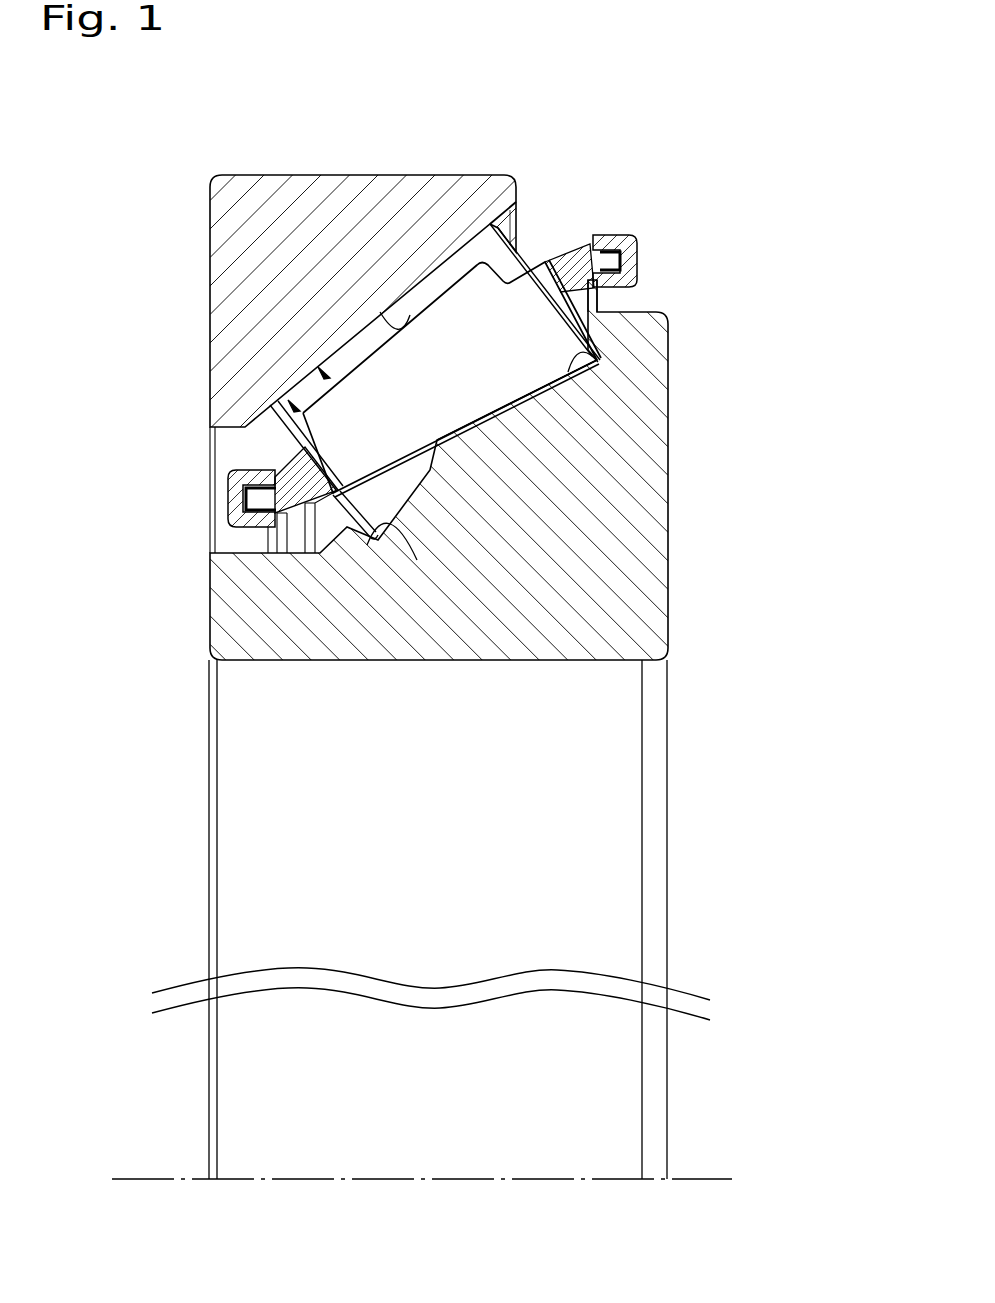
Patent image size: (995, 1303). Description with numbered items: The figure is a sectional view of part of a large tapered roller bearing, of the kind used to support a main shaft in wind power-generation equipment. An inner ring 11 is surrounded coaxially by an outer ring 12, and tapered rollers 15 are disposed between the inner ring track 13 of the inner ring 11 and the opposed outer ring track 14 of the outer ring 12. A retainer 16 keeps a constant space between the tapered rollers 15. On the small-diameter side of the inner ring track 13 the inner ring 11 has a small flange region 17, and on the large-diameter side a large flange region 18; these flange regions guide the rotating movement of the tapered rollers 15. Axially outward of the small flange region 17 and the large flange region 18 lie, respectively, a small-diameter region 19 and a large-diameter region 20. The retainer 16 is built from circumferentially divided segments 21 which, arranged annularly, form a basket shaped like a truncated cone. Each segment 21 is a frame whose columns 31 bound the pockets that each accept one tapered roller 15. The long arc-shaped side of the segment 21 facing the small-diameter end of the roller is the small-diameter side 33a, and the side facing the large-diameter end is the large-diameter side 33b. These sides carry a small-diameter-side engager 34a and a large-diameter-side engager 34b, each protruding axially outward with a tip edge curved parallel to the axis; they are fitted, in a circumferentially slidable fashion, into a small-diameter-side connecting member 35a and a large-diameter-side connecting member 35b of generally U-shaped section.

The inner ring 11 is at (650, 580).
The outer ring 12 is at (430, 192).
The inner ring track 13 is at (520, 426).
The outer ring track 14 is at (392, 318).
The tapered roller 15 is at (410, 305).
The retainer 16 is at (326, 375).
The small flange region 17 is at (405, 520).
The large flange region 18 is at (600, 390).
The small-diameter region 19 is at (302, 547).
The large-diameter region 20 is at (618, 312).
The segment 21 is at (296, 408).
The column 31 is at (433, 390).
The small-diameter side 33a is at (292, 470).
The large-diameter side 33b is at (550, 270).
The small-diameter-side engager 34a is at (230, 527).
The large-diameter-side engager 34b is at (610, 240).
The small-diameter-side connecting member 35a is at (250, 472).
The large-diameter-side connecting member 35b is at (635, 250).